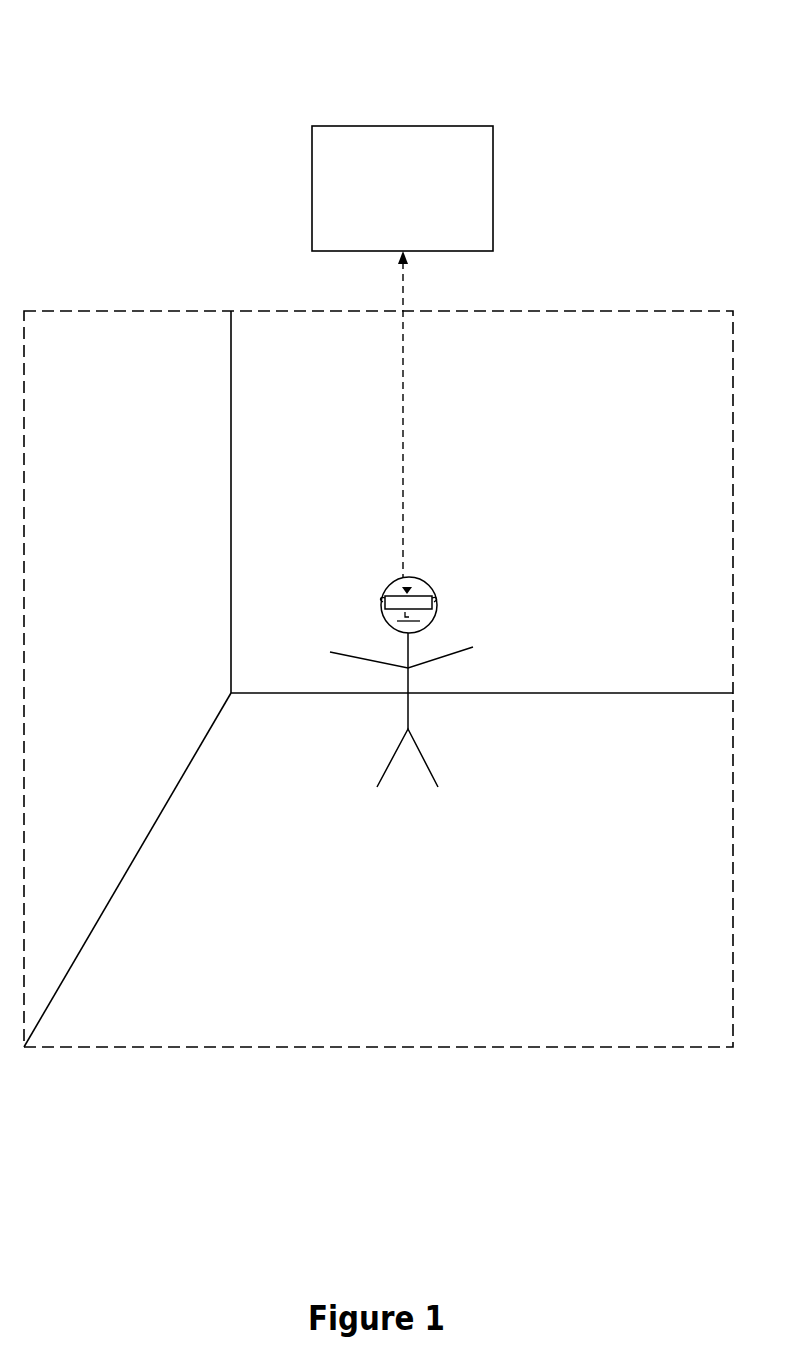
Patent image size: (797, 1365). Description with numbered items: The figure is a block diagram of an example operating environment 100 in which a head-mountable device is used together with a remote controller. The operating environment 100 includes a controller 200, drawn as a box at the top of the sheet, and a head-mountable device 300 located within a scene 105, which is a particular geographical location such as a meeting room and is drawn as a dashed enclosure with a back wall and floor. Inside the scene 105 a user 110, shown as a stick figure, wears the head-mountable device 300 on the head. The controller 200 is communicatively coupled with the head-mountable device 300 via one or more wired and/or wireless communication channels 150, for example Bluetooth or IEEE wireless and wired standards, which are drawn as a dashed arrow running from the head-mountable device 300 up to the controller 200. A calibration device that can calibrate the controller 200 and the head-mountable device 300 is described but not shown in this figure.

The operating environment 100 is at (148, 51).
The controller 200 is at (402, 188).
The scene 105 is at (378, 679).
The communication channels 150 is at (403, 403).
The user 110 is at (388, 770).
The head-mountable device 300 is at (423, 597).